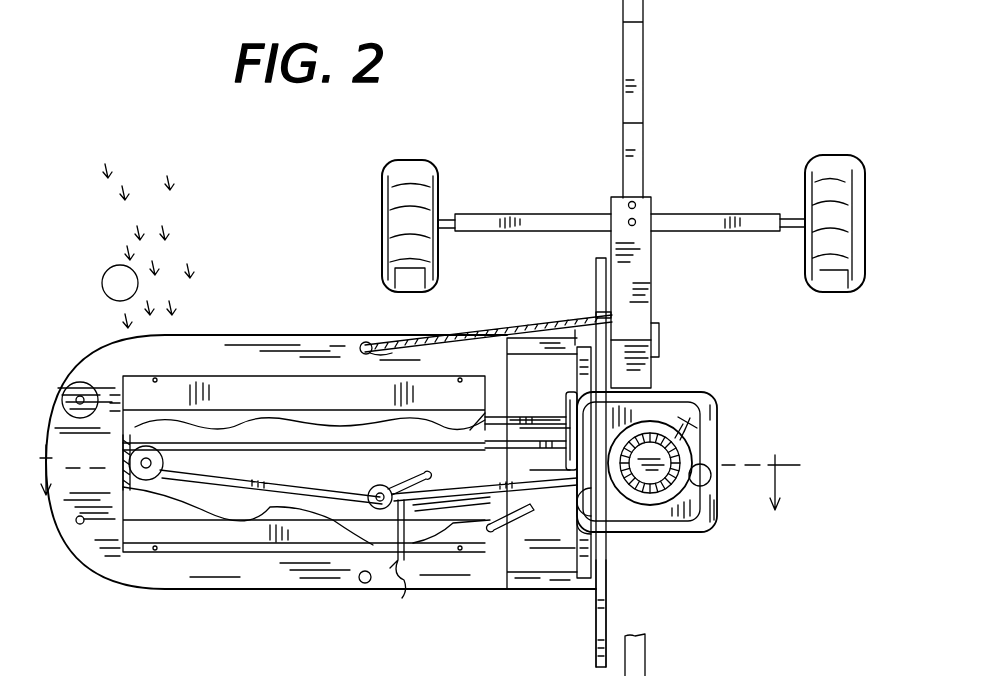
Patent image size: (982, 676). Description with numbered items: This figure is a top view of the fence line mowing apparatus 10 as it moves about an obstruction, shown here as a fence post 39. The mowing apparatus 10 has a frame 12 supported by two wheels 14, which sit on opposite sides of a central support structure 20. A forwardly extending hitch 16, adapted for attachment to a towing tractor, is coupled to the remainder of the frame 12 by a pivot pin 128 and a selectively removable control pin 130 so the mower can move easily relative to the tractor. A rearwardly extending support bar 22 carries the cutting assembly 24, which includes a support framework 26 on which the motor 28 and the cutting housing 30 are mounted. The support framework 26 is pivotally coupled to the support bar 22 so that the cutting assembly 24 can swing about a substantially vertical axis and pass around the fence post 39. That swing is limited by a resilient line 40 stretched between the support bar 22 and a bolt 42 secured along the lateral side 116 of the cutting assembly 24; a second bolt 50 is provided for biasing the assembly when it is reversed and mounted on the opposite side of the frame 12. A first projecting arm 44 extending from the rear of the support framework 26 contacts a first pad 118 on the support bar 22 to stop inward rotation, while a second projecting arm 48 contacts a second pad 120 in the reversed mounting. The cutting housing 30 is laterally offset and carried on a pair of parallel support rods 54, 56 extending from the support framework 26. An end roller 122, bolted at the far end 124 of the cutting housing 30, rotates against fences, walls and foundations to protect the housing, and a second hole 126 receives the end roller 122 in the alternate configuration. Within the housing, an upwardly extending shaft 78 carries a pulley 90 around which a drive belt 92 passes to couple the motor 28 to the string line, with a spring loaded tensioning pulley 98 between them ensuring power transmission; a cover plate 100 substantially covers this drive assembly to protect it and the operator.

The mowing apparatus 10 is at (498, 90).
The frame 12 is at (655, 198).
The wheels 14 is at (385, 185).
The forwardly extending hitch 16 is at (647, 68).
The central support structure 20 is at (745, 212).
The rearwardly extending support bar 22 is at (660, 342).
The cutting assembly 24 is at (688, 478).
The support framework 26 is at (600, 381).
The motor 28 is at (718, 428).
The cutting housing 30 is at (300, 335).
The fence post 39 is at (115, 278).
The resilient line 40 is at (488, 328).
The bolt 42 is at (358, 342).
The first projecting arm 44 is at (596, 280).
The second projecting arm 48 is at (607, 632).
The second bolt 50 is at (360, 581).
The support rod 54 is at (575, 330).
The support rod 56 is at (580, 585).
The upwardly extending shaft 78 is at (146, 462).
The pulley 90 is at (150, 460).
The drive belt 92 is at (241, 508).
The spring loaded tensioning pulley 98 is at (378, 512).
The cover plate 100 is at (170, 552).
The lateral side 116 is at (384, 340).
The first pad 118 is at (610, 332).
The second pad 120 is at (652, 334).
The end roller 122 is at (80, 400).
The far end 124 is at (52, 505).
The second hole 126 is at (82, 525).
The pivot pin 128 is at (630, 200).
The selectively removable control pin 130 is at (628, 220).